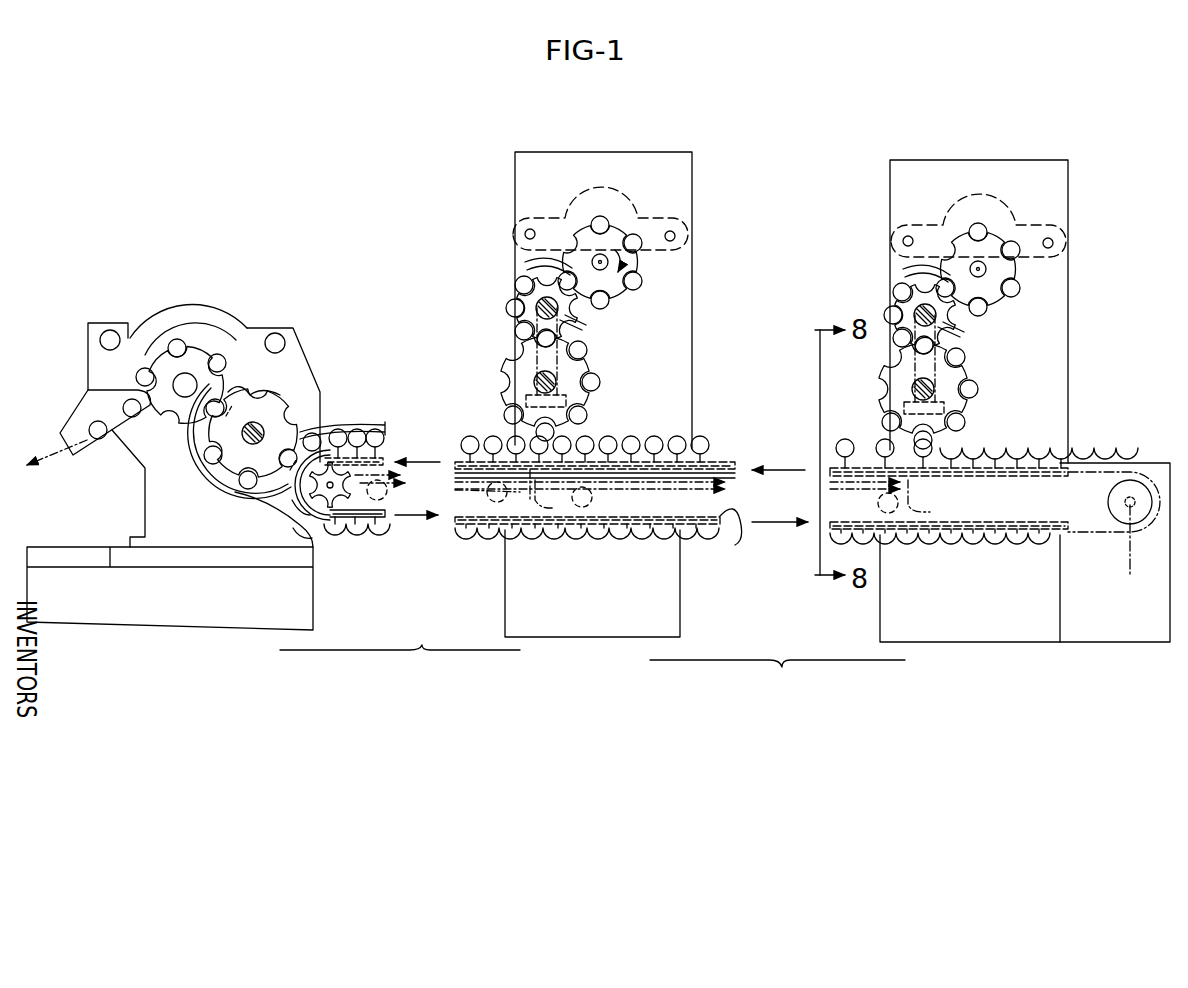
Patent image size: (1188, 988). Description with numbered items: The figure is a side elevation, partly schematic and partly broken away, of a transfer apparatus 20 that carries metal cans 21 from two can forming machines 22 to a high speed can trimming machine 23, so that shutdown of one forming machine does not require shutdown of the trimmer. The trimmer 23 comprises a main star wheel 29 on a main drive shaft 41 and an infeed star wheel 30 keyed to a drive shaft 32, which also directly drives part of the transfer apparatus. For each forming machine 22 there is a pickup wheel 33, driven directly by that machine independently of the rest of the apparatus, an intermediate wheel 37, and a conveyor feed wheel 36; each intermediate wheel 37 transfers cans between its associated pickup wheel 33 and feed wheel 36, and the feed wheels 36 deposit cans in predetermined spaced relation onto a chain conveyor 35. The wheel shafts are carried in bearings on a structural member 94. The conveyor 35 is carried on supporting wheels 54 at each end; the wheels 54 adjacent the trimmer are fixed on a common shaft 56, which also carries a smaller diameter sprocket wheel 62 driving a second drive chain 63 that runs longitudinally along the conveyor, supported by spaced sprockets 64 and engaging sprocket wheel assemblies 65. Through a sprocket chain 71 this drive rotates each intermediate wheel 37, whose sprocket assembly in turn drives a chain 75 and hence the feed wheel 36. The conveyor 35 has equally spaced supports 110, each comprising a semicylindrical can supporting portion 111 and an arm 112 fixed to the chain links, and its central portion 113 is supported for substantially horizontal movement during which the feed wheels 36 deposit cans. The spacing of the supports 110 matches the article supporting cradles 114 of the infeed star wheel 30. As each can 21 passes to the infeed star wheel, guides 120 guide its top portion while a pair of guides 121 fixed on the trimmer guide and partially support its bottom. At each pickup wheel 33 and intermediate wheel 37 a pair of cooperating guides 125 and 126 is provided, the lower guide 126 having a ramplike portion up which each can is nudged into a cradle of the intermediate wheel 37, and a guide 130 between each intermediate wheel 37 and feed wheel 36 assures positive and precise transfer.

The transfer apparatus 20 is at (803, 175).
The metal cans 21 is at (380, 438).
The can forming machines 22 is at (672, 218).
The can trimming machine 23 is at (233, 282).
The main star wheel 29 is at (200, 352).
The infeed star wheel 30 is at (262, 415).
The drive shaft 32 is at (262, 436).
The pickup wheels 33 is at (630, 262).
The chain conveyor 35 is at (748, 535).
The conveyor feed wheels 36 is at (586, 405).
The intermediate wheels 37 is at (520, 302).
The shaft 41 is at (178, 395).
The supporting wheels 54 is at (318, 510).
The common shaft 56 is at (331, 490).
The smaller diameter sprocket wheel 62 is at (338, 498).
The second drive chain 63 is at (465, 490).
The spaced sprockets 64 is at (500, 500).
The sprocket wheel assemblies 65 is at (552, 505).
The sprocket chain 71 is at (560, 426).
The chain 75 is at (560, 386).
The structural member 94 is at (678, 358).
The supports 110 is at (690, 532).
The semicylindrical can supporting portion 111 is at (652, 542).
The arm 112 is at (735, 463).
The central portion 113 is at (735, 475).
The article supporting cradles 114 is at (258, 395).
The guides 120 is at (330, 434).
The guides 121 is at (215, 478).
The guide 125 is at (525, 260).
The lower guide 126 is at (590, 328).
The guide 130 is at (565, 340).